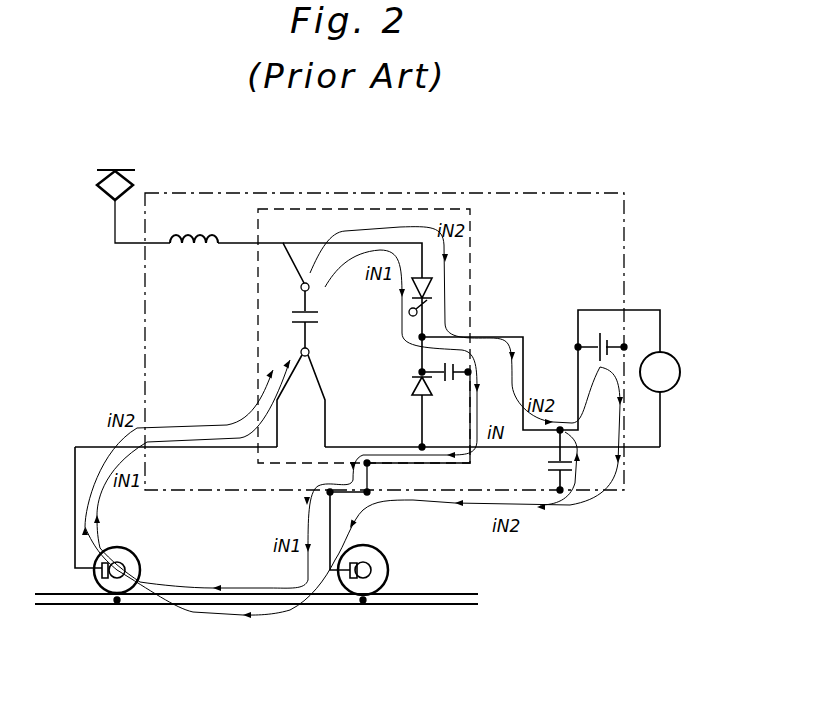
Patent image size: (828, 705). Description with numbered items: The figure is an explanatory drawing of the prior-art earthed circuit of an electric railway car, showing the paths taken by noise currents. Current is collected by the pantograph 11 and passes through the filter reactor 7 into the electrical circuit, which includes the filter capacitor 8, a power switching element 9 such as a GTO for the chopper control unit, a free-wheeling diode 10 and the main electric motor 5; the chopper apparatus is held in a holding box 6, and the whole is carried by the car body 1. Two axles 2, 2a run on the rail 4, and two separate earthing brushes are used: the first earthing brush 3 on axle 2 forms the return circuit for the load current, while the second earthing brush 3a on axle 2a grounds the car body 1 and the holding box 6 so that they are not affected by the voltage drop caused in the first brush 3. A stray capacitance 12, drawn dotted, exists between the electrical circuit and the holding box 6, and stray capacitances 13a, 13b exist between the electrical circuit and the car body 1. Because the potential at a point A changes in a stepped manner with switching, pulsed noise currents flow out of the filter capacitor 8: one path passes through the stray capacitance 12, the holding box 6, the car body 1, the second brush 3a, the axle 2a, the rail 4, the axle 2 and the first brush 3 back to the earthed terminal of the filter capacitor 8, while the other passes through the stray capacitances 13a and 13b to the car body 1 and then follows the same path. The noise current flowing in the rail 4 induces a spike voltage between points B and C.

The car body 1 is at (260, 193).
The axle 2 is at (138, 560).
The axle 2a is at (388, 572).
The first earthing brush 3 is at (98, 588).
The second earthing brush 3a is at (352, 578).
The rail 4 is at (423, 605).
The main electric motor 5 is at (675, 355).
The holding box 6 is at (365, 209).
The filter reactor 7 is at (197, 237).
The filter capacitor 8 is at (293, 315).
The power switching element 9 is at (432, 288).
The free-wheeling diode 10 is at (412, 387).
The pantograph 11 is at (133, 173).
The stray capacitance 12 is at (452, 382).
The stray capacitance 13a is at (600, 336).
The stray capacitance 13b is at (552, 472).
The point A is at (418, 339).
The point B is at (118, 603).
The point C is at (363, 603).